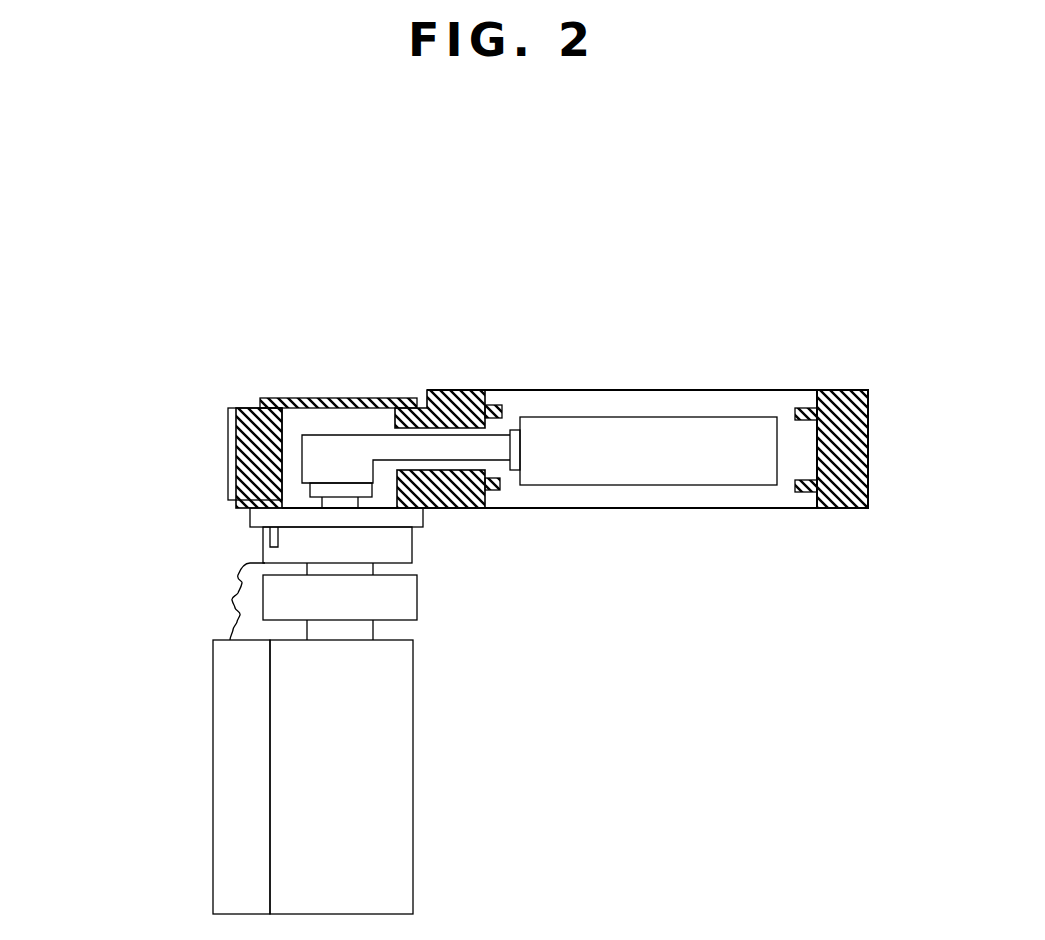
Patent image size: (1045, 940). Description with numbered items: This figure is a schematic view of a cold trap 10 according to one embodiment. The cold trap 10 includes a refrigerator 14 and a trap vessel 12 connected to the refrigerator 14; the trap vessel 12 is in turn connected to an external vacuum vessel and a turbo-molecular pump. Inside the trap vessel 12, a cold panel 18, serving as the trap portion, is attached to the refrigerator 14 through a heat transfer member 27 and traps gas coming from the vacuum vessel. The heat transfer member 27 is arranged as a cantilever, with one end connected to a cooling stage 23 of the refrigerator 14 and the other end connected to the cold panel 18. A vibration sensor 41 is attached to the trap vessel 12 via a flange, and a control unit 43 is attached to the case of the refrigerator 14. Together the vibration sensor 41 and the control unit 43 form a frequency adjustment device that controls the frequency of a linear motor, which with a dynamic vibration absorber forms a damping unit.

The cold trap 10 is at (515, 237).
The trap vessel 12 is at (858, 390).
The refrigerator 14 is at (293, 795).
The cold panel 18 is at (623, 425).
The cooling stage 23 is at (332, 490).
The heat transfer member 27 is at (352, 447).
The vibration sensor 41 is at (262, 537).
The control unit 43 is at (237, 663).